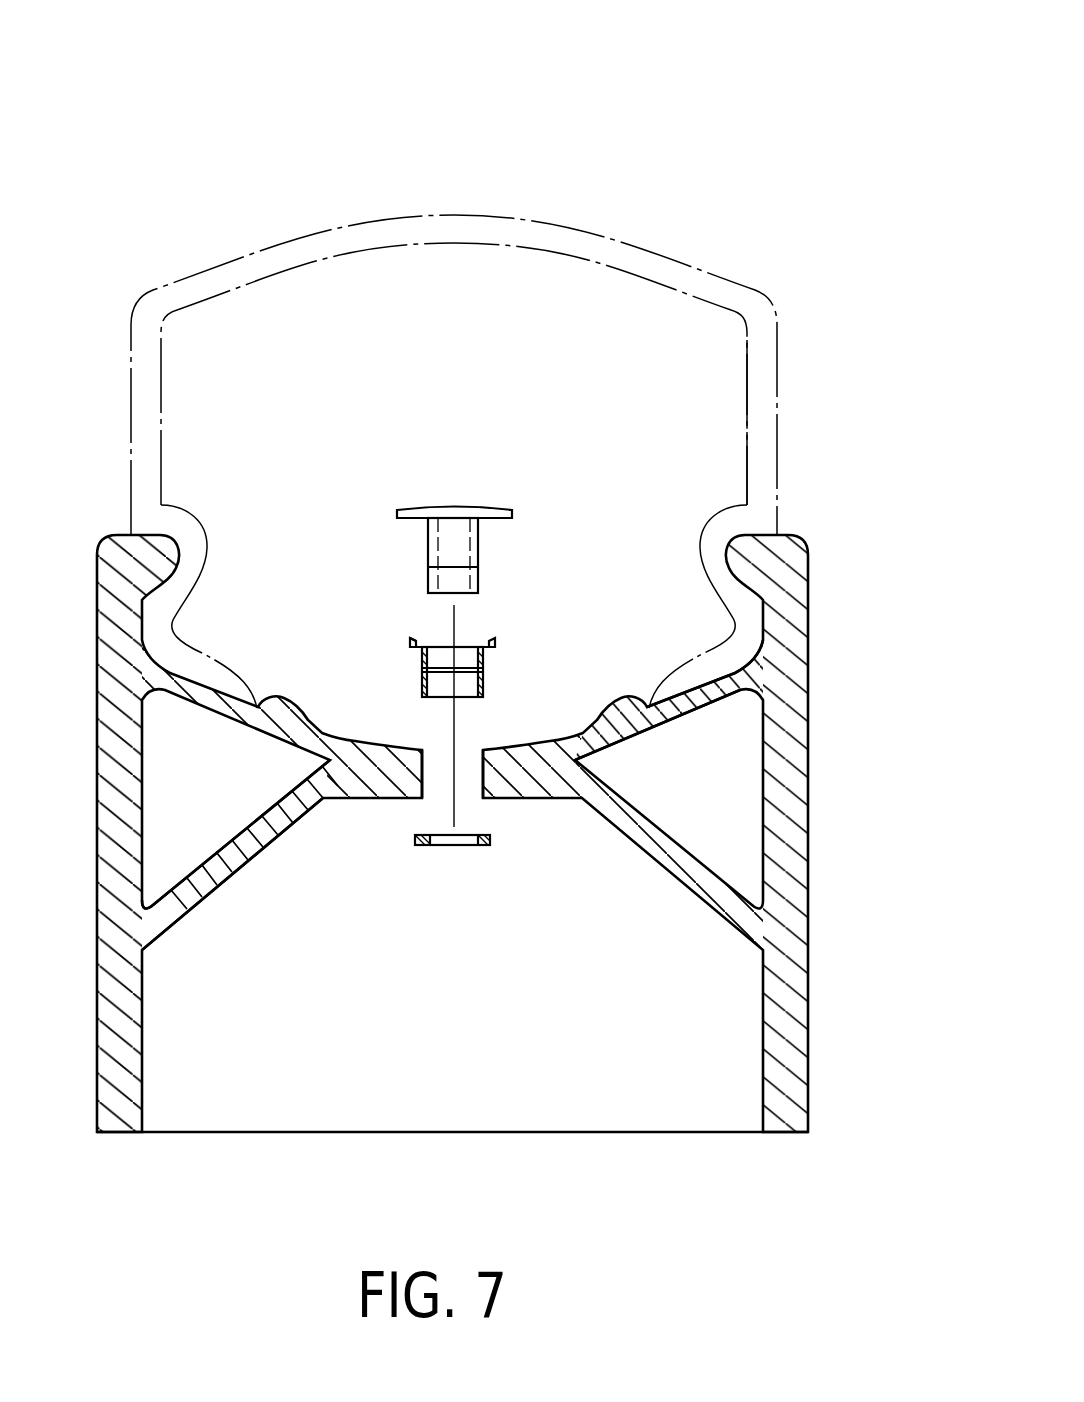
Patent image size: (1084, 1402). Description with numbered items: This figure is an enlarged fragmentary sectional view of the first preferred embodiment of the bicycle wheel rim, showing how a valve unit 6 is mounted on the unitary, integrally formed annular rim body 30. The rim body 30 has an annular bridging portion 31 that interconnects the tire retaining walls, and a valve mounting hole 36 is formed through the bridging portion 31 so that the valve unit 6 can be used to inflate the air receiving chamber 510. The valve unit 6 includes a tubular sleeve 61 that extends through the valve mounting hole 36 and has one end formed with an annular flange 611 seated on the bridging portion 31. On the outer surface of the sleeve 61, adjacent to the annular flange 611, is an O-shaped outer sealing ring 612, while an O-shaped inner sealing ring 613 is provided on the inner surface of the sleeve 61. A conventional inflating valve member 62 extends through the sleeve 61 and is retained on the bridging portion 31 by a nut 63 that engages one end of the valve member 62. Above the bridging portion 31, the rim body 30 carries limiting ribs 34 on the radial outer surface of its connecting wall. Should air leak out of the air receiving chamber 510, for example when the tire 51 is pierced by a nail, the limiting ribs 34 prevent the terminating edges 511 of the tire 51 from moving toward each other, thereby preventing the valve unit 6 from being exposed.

The valve unit 6 is at (541, 558).
The rim body 30 is at (808, 997).
The bridging portion 31 is at (368, 770).
The limiting rib 34 is at (615, 717).
The valve mounting hole 36 is at (397, 800).
The tire 51 is at (536, 407).
The air receiving chamber 510 is at (707, 450).
The terminating edges 511 is at (678, 682).
The tubular sleeve 61 is at (445, 641).
The annular flange 611 is at (497, 643).
The outer sealing ring 612 is at (420, 645).
The inner sealing ring 613 is at (420, 668).
The inflating valve member 62 is at (400, 507).
The nut 63 is at (490, 845).